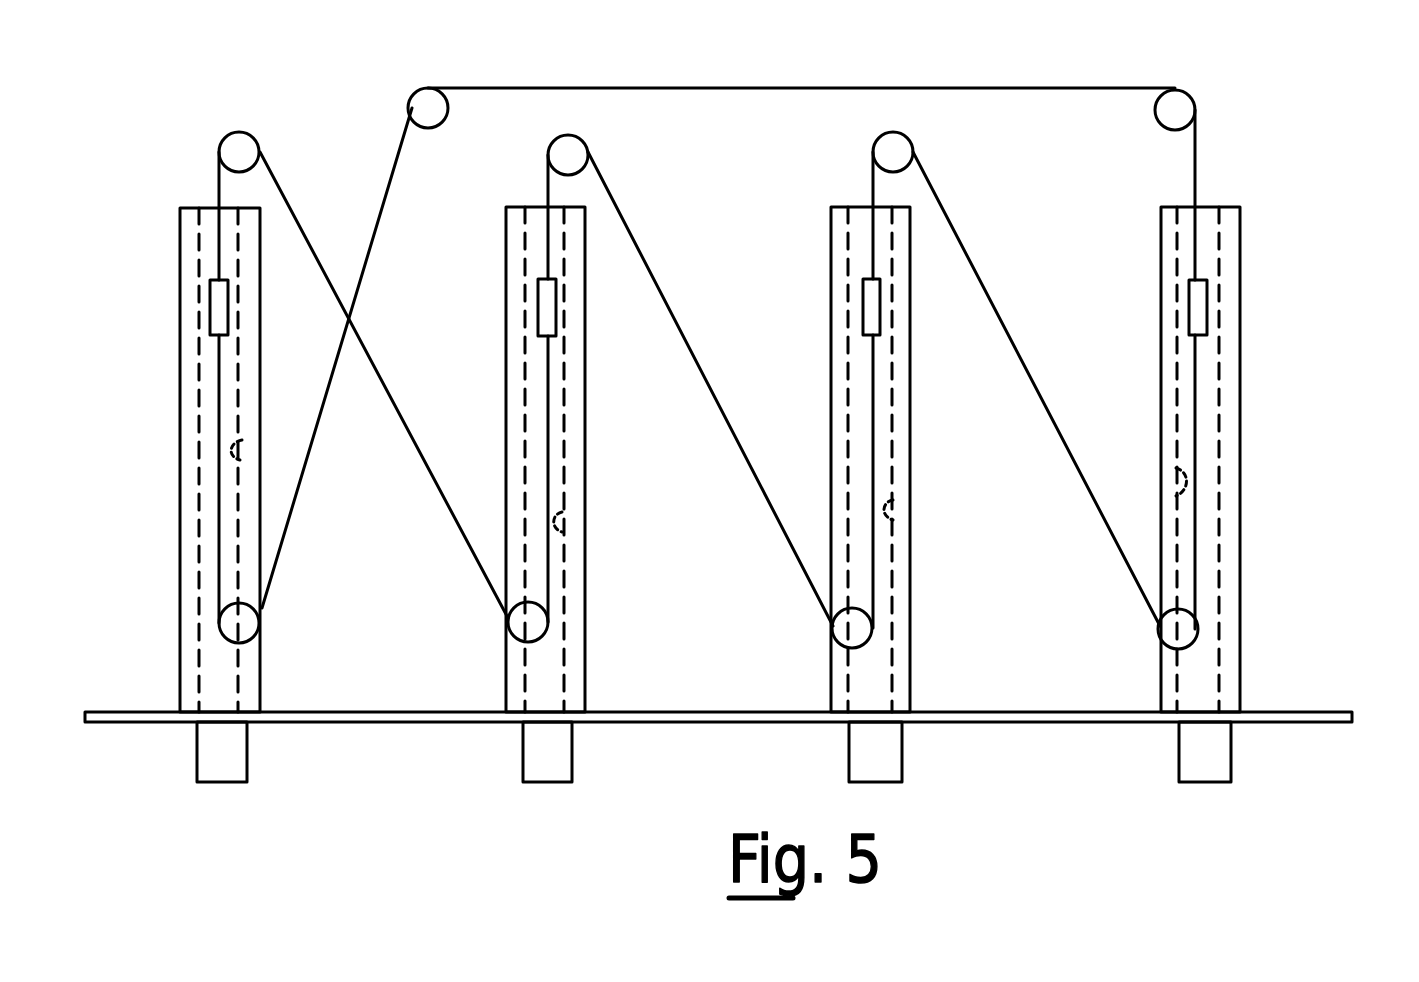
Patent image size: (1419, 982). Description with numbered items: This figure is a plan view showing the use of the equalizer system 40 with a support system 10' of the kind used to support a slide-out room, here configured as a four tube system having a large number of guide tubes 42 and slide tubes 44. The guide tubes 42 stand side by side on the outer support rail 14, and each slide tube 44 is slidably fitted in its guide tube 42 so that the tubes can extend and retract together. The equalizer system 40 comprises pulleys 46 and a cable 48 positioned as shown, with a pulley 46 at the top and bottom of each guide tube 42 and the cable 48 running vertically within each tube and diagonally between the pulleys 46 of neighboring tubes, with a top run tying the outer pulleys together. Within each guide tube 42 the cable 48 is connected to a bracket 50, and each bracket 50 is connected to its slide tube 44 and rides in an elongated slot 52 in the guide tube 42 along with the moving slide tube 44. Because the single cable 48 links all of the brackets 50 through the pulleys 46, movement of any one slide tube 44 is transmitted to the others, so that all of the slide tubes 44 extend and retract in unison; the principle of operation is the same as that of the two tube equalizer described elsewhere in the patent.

The support system 10' is at (1343, 142).
The outer support rail 14 is at (688, 713).
The equalizer system 40 is at (792, 86).
The guide tube 42 is at (243, 375).
The slide tube 44 is at (228, 760).
The pulley 46 is at (238, 153).
The cable 48 is at (368, 262).
The bracket 50 is at (220, 310).
The elongated slot 52 is at (236, 443).